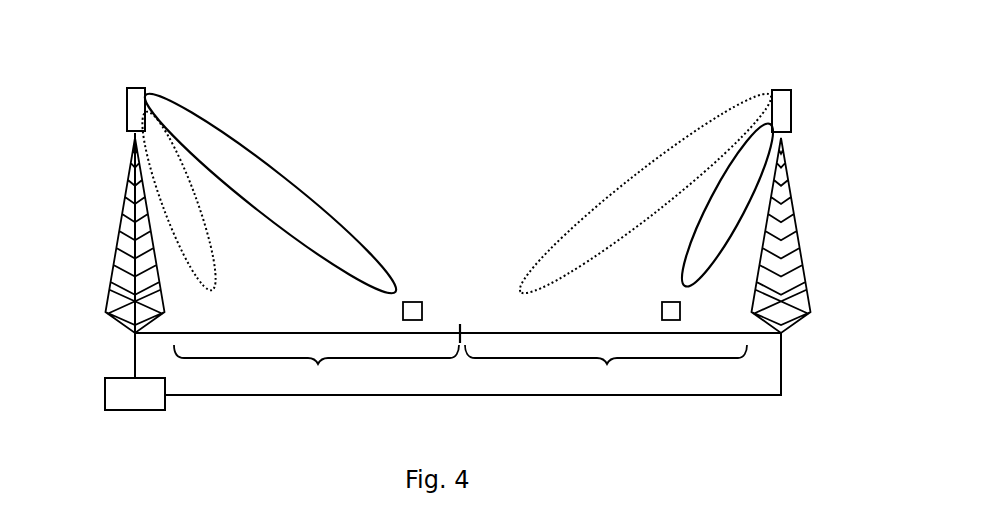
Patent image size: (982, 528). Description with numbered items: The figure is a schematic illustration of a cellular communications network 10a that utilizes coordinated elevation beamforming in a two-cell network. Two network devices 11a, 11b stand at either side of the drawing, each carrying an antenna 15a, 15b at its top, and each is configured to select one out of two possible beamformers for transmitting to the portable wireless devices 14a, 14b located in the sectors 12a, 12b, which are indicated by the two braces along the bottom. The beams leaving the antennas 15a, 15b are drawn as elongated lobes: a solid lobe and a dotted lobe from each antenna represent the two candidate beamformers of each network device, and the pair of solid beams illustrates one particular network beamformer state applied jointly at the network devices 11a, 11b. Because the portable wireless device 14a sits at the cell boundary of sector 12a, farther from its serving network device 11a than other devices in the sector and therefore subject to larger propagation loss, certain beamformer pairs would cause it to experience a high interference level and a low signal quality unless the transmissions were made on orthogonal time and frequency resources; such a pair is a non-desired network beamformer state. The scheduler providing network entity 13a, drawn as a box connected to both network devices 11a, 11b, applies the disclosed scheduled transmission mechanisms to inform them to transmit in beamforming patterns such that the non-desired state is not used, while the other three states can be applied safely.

The cellular communications network 10a is at (633, 79).
The network device 11a is at (122, 318).
The network device 11b is at (792, 320).
The sector 12a is at (317, 360).
The sector 12b is at (606, 371).
The scheduler providing network entity 13a is at (135, 394).
The portable wireless device 14a is at (423, 302).
The portable wireless device 14b is at (662, 312).
The antenna 15a is at (127, 112).
The antenna 15b is at (792, 110).